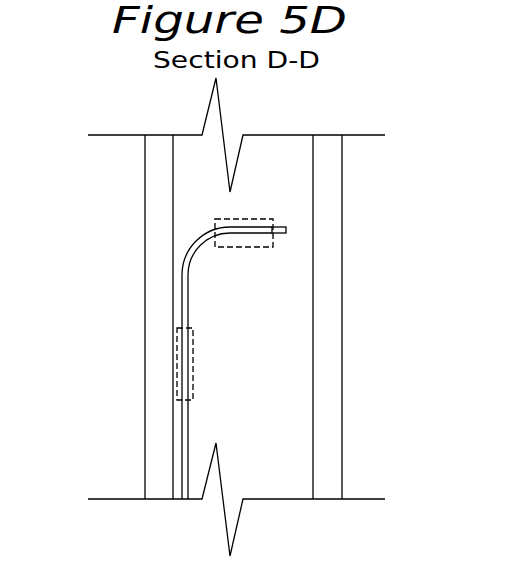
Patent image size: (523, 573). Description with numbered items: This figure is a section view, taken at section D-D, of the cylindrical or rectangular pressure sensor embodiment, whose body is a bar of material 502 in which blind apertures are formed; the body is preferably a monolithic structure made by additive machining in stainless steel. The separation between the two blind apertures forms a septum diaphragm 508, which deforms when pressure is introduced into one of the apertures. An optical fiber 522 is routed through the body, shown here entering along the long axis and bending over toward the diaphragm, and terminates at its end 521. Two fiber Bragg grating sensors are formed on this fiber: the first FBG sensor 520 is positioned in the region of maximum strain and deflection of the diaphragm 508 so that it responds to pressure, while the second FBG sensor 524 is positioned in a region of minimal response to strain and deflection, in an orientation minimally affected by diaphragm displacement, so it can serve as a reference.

The bar of material 502 is at (333, 380).
The diaphragm 508 is at (265, 350).
The first FBG sensor 520 is at (262, 212).
The fiber end 521 is at (286, 230).
The optical fiber 522 is at (192, 305).
The second FBG sensor 524 is at (170, 350).